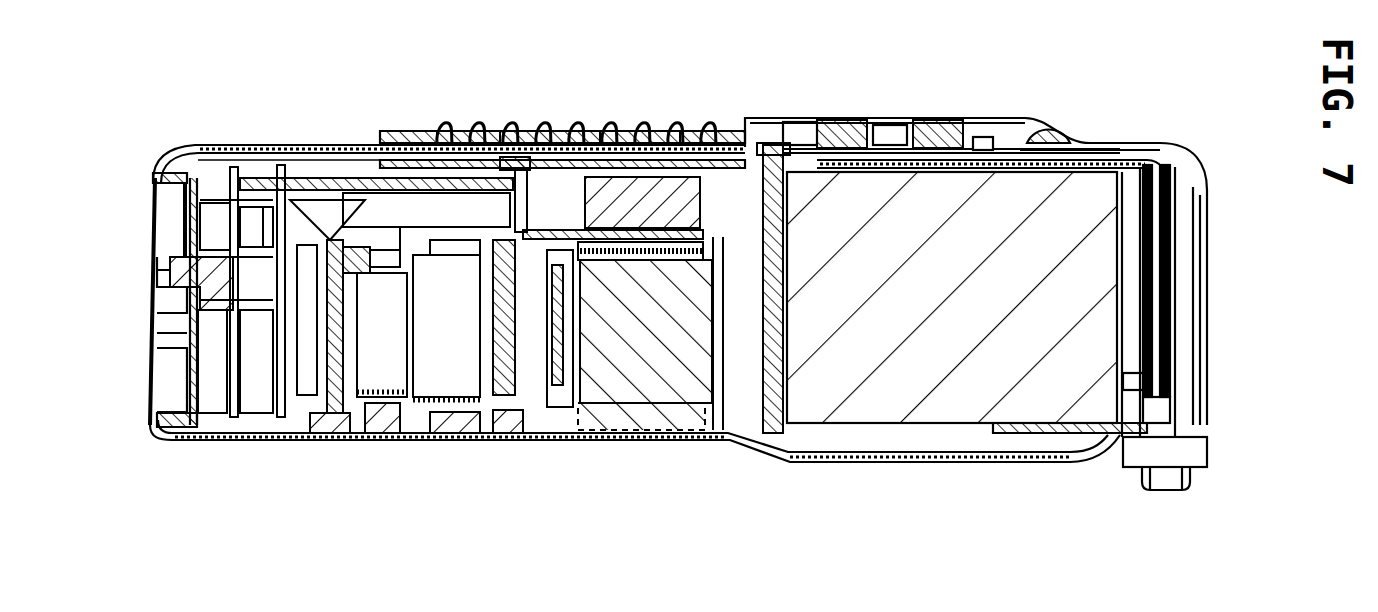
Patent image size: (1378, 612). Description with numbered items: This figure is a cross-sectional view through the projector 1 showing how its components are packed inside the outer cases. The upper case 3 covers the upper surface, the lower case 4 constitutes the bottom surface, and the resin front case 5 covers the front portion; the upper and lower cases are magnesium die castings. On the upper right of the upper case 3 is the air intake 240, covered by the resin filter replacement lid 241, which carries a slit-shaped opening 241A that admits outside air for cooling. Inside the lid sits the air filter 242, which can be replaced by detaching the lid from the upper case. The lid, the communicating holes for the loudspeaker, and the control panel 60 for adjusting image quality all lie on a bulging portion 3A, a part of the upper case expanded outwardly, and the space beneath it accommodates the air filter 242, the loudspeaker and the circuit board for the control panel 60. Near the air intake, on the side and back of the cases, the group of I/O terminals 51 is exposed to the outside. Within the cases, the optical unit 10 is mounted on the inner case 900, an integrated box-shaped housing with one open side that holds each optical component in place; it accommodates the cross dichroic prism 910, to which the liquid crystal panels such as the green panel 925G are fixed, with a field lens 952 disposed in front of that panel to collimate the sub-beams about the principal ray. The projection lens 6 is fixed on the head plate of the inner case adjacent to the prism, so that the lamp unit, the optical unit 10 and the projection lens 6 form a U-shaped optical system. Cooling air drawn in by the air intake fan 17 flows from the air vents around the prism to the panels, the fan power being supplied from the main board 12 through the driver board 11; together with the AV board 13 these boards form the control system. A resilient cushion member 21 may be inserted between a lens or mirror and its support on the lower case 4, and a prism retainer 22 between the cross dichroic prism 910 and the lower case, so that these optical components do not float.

The projector 1 is at (777, 108).
The upper case 3 is at (306, 146).
The bulging portion 3A is at (970, 120).
The lower case 4 is at (372, 440).
The front case 5 is at (1205, 358).
The projection lens 6 is at (1103, 293).
The optical unit 10 is at (320, 250).
The driver board 11 is at (300, 200).
The main board 12 is at (183, 219).
The AV board 13 is at (183, 256).
The air intake fan 17 is at (641, 130).
The resilient cushion member 21 is at (448, 440).
The prism retainer 22 is at (698, 440).
The I/O terminals 51 is at (135, 338).
The control panel 60 is at (836, 120).
The air intake 240 is at (525, 116).
The filter replacement lid 241 is at (415, 146).
The slit-shaped opening 241A is at (570, 127).
The air filter 242 is at (462, 128).
The inner case 900 is at (374, 305).
The cross dichroic prism 910 is at (658, 368).
The liquid crystal panel for green 925G is at (563, 440).
The field lens 952 is at (508, 440).